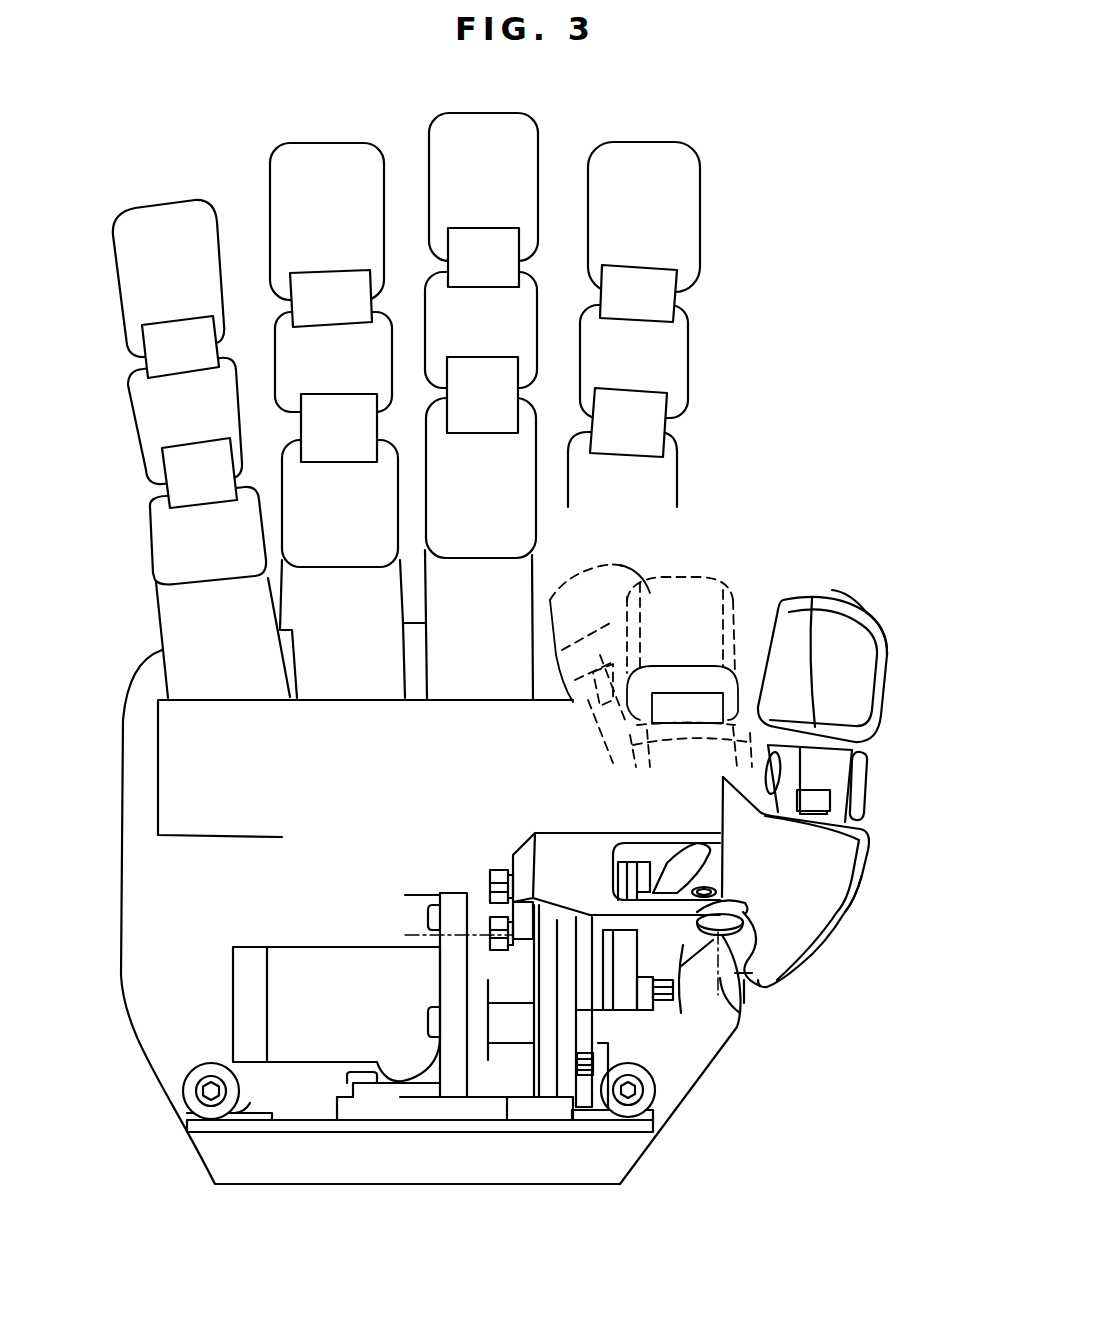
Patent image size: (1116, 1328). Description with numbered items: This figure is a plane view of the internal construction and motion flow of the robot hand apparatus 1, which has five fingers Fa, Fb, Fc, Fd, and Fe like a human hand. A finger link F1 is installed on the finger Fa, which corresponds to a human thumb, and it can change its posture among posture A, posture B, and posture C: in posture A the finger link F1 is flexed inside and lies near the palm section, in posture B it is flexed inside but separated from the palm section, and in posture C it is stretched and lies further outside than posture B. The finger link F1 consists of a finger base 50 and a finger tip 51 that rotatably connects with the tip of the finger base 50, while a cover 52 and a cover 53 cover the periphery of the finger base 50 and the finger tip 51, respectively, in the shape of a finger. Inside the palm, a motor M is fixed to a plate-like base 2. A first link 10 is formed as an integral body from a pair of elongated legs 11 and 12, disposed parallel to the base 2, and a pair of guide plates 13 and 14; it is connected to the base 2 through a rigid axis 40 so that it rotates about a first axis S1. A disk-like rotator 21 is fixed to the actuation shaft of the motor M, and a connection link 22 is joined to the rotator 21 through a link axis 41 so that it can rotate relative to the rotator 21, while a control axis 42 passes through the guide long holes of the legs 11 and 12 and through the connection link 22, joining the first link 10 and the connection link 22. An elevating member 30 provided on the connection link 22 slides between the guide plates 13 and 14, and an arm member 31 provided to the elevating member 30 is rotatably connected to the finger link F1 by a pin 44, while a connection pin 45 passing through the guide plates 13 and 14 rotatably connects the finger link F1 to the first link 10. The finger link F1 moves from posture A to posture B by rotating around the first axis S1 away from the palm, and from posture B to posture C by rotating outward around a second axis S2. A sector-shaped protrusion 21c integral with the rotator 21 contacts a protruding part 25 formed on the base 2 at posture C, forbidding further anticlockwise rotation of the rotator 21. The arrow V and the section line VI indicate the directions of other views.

The robot hand apparatus 1 is at (768, 470).
The base 2 is at (548, 1095).
The first link 10 is at (517, 825).
The leg 11 is at (510, 957).
The leg 12 is at (597, 960).
The guide plate 13 is at (738, 1040).
The guide plate 14 is at (660, 838).
The rotator 21 is at (633, 1073).
The protrusion 21c is at (605, 1105).
The connection link 22 is at (620, 1012).
The protruding part 25 is at (583, 1097).
The elevating member 30 is at (648, 863).
The arm member 31 is at (680, 850).
The rigid axis 40 is at (498, 922).
The link axis 41 is at (668, 992).
The control axis 42 is at (498, 885).
The pin 44 is at (805, 960).
The connection pin 45 is at (740, 975).
The finger base 50 is at (866, 775).
The finger tip 51 is at (836, 782).
The cover 52 is at (837, 880).
The cover 53 is at (872, 655).
The motor M is at (302, 957).
The first axis S1 is at (412, 928).
The second axis S2 is at (742, 1003).
The finger link F1 is at (862, 920).
The finger Fa is at (886, 616).
The finger Fb is at (655, 129).
The finger Fc is at (490, 103).
The finger Fd is at (326, 133).
The finger Fe is at (169, 191).
The posture A is at (586, 571).
The posture B is at (685, 571).
The posture C is at (843, 597).
The view V direction V is at (850, 1037).
The section VI- VI is at (548, 798).